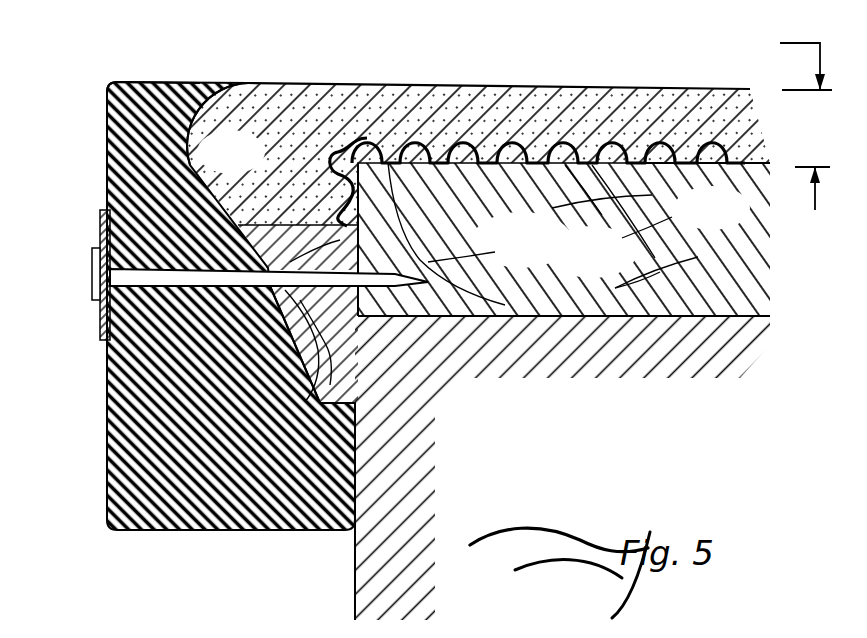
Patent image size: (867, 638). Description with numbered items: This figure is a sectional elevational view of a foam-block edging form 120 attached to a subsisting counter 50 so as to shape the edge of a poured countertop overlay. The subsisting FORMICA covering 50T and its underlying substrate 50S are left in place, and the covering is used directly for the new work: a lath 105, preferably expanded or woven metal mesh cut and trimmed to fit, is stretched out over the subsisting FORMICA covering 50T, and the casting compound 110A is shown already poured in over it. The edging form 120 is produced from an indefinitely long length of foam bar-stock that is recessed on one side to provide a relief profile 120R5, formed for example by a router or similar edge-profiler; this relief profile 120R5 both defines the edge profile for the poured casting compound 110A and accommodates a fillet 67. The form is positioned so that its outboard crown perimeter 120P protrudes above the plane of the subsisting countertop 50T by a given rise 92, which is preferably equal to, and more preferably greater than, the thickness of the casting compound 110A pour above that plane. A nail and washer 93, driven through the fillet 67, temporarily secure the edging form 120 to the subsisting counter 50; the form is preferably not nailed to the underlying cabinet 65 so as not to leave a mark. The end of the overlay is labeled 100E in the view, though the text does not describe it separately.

The edging form 120 is at (122, 532).
The outboard crown perimeter 120P is at (158, 82).
The relief profile 120R5 is at (258, 82).
The casting compound 110A is at (365, 85).
The end of stopper 100E is at (258, 167).
The lath 105 is at (665, 142).
The subsisting counter 50 is at (542, 254).
The substrate 50S is at (612, 270).
The subsisting FORMICA covering 50T is at (713, 166).
The underlying cabinet 65 is at (516, 422).
The fillet 67 is at (356, 372).
The nail and washer 93 is at (92, 275).
The rise 92 is at (785, 120).